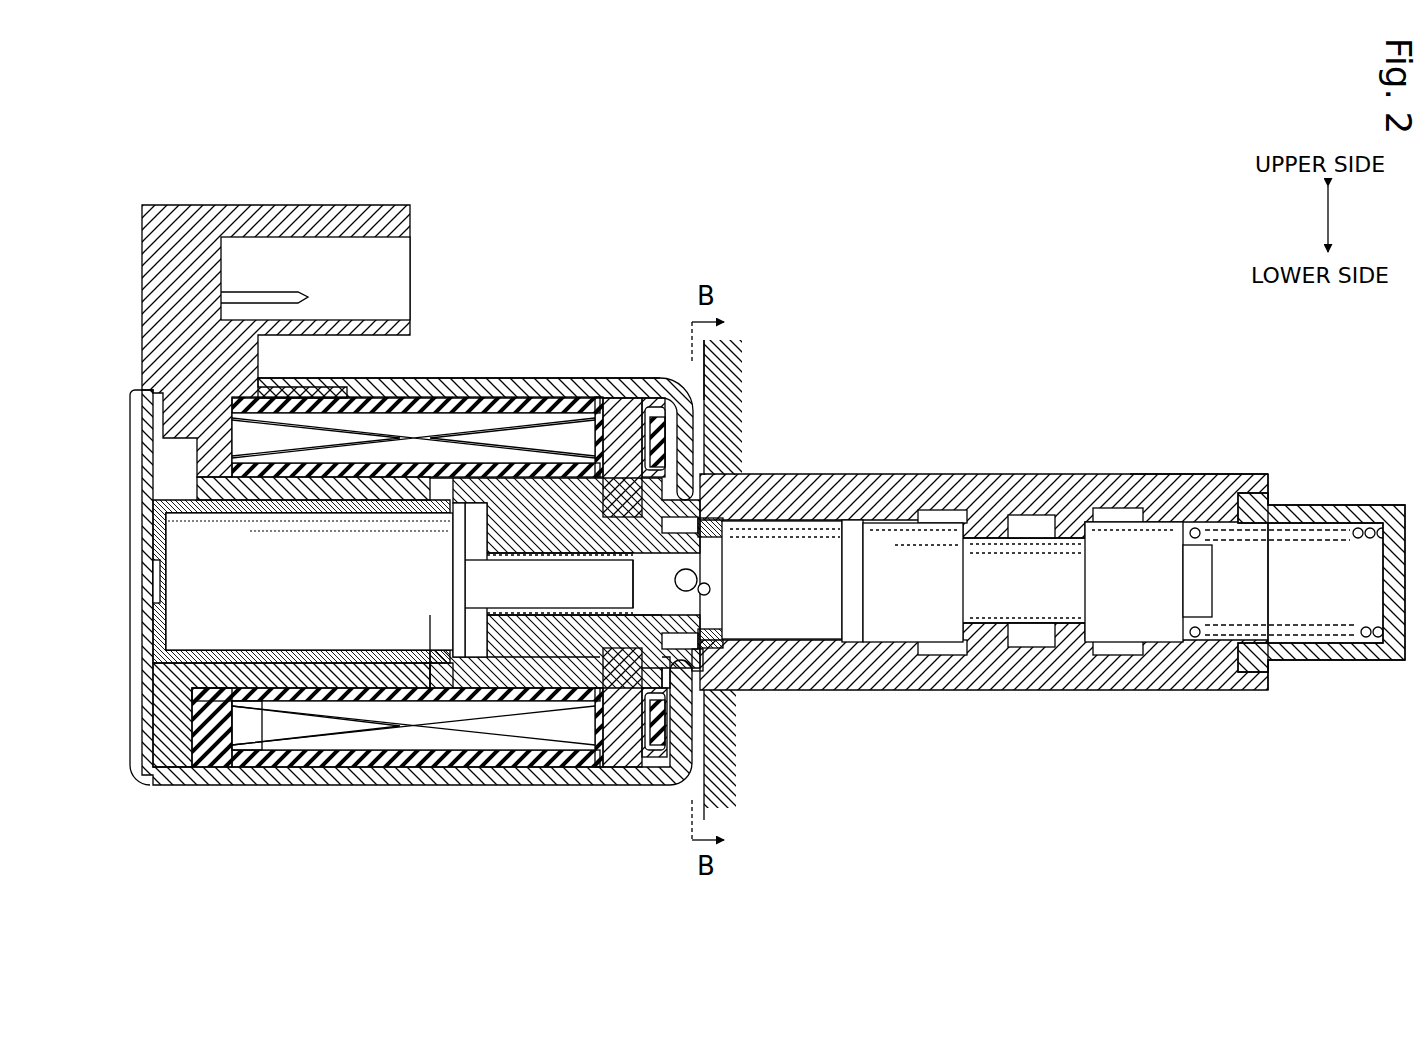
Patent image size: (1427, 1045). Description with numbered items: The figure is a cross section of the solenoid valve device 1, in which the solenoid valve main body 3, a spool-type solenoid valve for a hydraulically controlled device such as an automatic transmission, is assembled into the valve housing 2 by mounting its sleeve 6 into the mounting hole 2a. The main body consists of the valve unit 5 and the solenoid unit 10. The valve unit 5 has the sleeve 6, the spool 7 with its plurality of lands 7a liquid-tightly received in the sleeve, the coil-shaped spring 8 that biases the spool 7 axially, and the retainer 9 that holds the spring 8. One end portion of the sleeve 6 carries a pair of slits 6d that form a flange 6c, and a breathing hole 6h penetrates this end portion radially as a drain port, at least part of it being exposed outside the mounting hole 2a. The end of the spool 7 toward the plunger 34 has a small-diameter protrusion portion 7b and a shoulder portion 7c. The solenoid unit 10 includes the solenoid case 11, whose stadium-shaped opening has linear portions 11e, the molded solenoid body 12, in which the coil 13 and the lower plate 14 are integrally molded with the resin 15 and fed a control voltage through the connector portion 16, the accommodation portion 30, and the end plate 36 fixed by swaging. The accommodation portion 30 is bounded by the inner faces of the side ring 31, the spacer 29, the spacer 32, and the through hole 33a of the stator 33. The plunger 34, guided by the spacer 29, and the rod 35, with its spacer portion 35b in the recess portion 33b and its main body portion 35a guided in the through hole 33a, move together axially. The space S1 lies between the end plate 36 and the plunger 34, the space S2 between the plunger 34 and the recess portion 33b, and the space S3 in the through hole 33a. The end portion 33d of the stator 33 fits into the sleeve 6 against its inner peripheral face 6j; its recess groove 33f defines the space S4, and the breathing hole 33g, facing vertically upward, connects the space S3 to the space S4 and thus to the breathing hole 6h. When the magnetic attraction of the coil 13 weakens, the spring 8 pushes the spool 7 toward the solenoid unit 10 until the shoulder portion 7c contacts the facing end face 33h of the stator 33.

The solenoid valve device 1 is at (1178, 266).
The valve housing 2 is at (1286, 386).
The mounting hole 2a is at (950, 472).
The solenoid valve main body 3 is at (220, 190).
The valve unit 5 is at (1118, 468).
The sleeve 6 is at (1046, 472).
The flange 6c is at (664, 415).
The slit 6d is at (730, 470).
The breathing hole 6h is at (700, 585).
The inner peripheral face 6j is at (680, 654).
The spool 7 is at (1030, 600).
The land 7a is at (1125, 625).
The protrusion portion 7b is at (640, 622).
The shoulder portion 7c is at (652, 598).
The spring 8 is at (1360, 640).
The retainer 9 is at (1335, 504).
The solenoid unit 10 is at (611, 236).
The solenoid case 11 is at (438, 376).
The linear portion 11e is at (737, 445).
The molded solenoid body 12 is at (378, 790).
The coil 13 is at (296, 762).
The lower plate 14 is at (614, 396).
The resin 15 is at (331, 770).
The connector portion 16 is at (312, 228).
The spacer 29 is at (270, 692).
The accommodation portion 30 is at (456, 682).
The side ring 31 is at (158, 700).
The spacer 32 is at (412, 700).
The stator 33 is at (570, 500).
The through hole 33a is at (548, 625).
The recess portion 33b is at (522, 655).
The end portion 33d is at (650, 652).
The recess groove 33f is at (705, 645).
The breathing hole 33g is at (700, 525).
The facing end face 33h is at (783, 523).
The plunger 34 is at (228, 582).
The rod 35 is at (540, 246).
The main body portion 35a is at (515, 440).
The spacer portion 35b is at (468, 440).
The end plate 36 is at (150, 640).
The space S1 is at (160, 530).
The space S2 is at (472, 516).
The space S3 is at (520, 543).
The space S4 is at (706, 672).